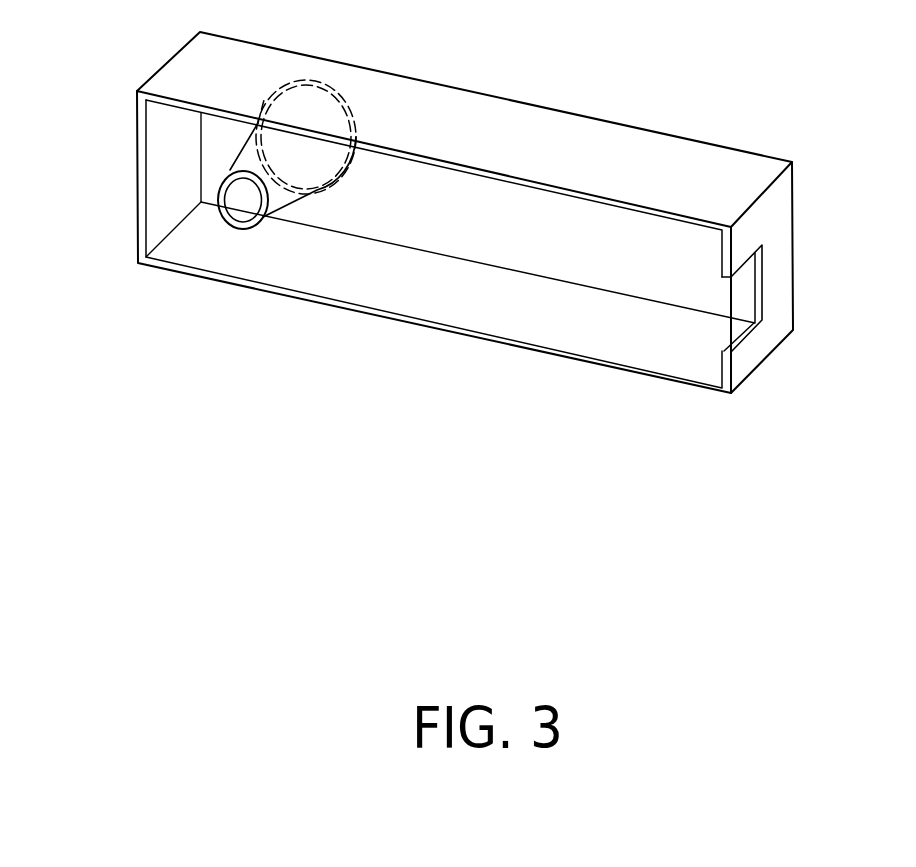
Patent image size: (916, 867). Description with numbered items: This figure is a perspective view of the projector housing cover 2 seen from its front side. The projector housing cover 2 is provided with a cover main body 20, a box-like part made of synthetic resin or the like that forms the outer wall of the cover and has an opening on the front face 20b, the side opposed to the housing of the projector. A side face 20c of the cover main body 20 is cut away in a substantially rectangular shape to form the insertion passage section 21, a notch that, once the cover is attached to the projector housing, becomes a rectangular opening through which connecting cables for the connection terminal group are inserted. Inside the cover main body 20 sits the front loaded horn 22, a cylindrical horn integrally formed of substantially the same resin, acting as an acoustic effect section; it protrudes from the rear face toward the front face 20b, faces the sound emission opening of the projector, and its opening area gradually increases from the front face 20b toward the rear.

The projector housing cover 2 is at (366, 346).
The cover main body 20 is at (567, 332).
The front face 20b is at (537, 182).
The side face 20c is at (778, 217).
The insertion passage section 21 is at (752, 286).
The front loaded horn 22 is at (224, 202).